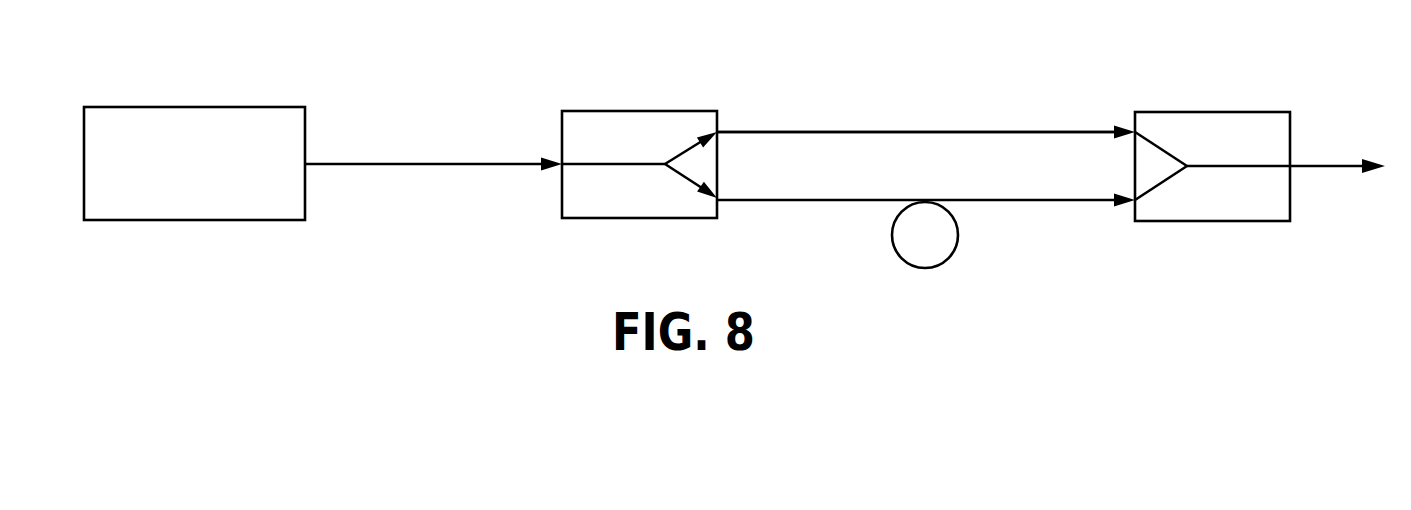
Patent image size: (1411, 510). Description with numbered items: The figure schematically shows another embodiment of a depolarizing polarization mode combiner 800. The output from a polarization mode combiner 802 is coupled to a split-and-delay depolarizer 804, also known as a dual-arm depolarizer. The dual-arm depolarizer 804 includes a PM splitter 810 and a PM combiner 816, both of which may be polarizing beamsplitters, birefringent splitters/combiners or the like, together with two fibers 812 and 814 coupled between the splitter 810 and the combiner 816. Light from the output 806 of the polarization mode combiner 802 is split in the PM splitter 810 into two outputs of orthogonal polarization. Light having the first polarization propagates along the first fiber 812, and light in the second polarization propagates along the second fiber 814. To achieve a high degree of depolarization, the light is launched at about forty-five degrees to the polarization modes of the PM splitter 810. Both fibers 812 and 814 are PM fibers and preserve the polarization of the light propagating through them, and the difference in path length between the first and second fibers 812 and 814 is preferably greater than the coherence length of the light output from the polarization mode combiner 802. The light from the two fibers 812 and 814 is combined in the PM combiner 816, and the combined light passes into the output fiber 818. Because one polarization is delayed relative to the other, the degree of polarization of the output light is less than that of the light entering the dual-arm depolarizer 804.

The depolarizing polarization mode combiner 800 is at (456, 43).
The polarization mode combiner 802 is at (202, 107).
The split-and-delay depolarizer 804 is at (799, 108).
The output 806 is at (305, 164).
The PM splitter 810 is at (635, 125).
The first fiber 812 is at (925, 131).
The second fiber 814 is at (828, 202).
The PM combiner 816 is at (1212, 113).
The output fiber 818 is at (1335, 172).